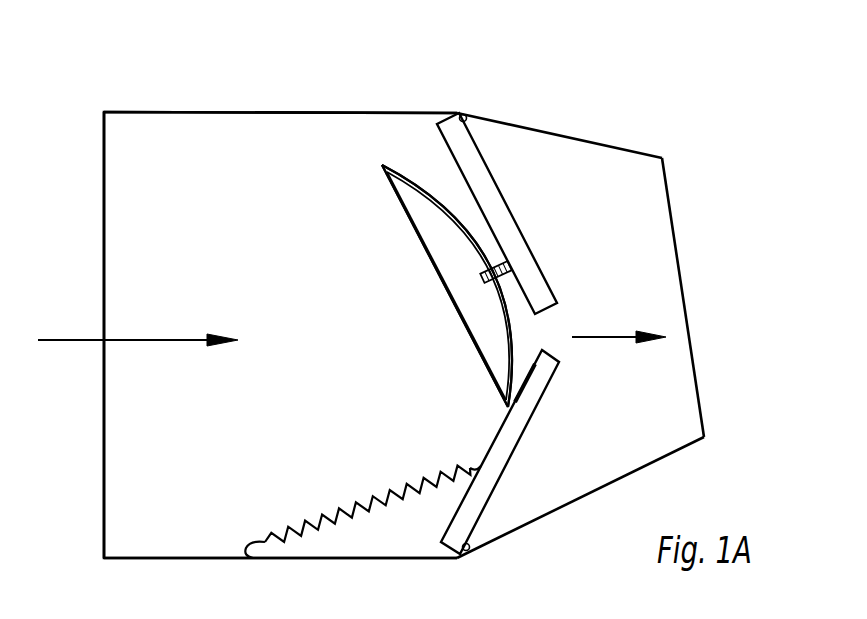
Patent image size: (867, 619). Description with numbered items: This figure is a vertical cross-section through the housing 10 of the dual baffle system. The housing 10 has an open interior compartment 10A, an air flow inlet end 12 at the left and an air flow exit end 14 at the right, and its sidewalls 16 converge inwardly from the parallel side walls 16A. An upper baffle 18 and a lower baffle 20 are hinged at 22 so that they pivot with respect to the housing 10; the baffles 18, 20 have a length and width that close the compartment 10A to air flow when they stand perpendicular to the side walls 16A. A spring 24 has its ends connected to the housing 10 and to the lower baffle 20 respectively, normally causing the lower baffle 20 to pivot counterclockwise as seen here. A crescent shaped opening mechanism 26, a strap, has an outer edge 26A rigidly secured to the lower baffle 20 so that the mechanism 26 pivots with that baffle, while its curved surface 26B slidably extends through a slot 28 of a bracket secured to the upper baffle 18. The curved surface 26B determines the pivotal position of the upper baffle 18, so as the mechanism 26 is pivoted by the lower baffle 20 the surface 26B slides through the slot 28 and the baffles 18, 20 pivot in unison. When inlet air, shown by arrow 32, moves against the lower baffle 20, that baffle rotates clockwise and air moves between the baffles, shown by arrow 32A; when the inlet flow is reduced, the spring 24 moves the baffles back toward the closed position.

The housing 10 is at (708, 130).
The open interior compartment 10A is at (290, 308).
The air flow inlet end 12 is at (104, 375).
The air flow exit end 14 is at (682, 283).
The sidewalls 16 is at (572, 135).
The parallel side walls 16A is at (242, 112).
The upper baffle 18 is at (487, 172).
The lower baffle 20 is at (527, 420).
The hinge 22 is at (462, 114).
The spring 24 is at (327, 520).
The crescent shaped opening mechanism 26 is at (405, 213).
The outer edge 26A is at (494, 377).
The curved surface 26B is at (508, 348).
The slot 28 is at (526, 258).
The inlet air arrow 32 is at (166, 338).
The air flow arrow between baffles 32A is at (615, 338).